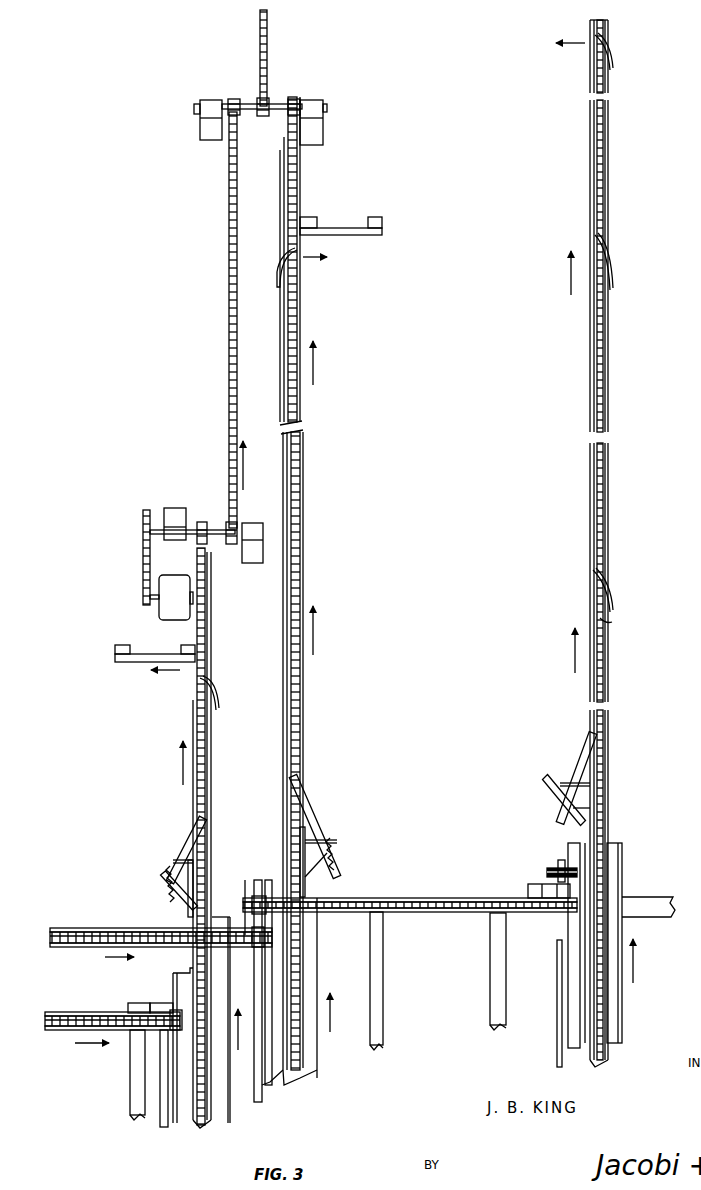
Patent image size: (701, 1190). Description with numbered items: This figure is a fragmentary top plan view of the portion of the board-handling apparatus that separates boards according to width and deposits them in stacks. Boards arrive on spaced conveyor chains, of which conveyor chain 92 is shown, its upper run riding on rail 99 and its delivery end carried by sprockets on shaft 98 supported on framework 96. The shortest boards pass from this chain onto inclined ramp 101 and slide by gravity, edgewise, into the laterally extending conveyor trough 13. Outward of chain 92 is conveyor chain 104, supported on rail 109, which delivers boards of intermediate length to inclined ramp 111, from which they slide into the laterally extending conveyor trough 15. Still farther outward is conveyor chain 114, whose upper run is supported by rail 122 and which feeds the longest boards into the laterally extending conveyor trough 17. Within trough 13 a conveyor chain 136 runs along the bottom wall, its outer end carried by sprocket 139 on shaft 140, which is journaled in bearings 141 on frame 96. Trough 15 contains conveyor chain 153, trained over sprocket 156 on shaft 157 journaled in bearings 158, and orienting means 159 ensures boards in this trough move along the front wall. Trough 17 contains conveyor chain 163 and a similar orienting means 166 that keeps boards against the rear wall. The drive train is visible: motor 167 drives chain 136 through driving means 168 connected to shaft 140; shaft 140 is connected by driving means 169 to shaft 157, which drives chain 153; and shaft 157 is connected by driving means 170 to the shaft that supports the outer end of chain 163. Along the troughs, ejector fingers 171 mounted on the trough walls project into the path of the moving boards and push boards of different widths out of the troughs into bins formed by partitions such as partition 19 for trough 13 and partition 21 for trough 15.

The laterally extending conveyor trough 13 is at (213, 995).
The laterally extending conveyor trough 15 is at (306, 973).
The laterally extending conveyor trough 17 is at (610, 1002).
The partition 19 is at (131, 665).
The partition 21 is at (364, 238).
The conveyor chain 92 is at (82, 1003).
The framework 96 is at (198, 137).
The shaft 98 is at (157, 1131).
The rail 99 is at (53, 1011).
The inclined ramp 101 is at (190, 1122).
The conveyor chain 104 is at (130, 927).
The rail 109 is at (83, 927).
The inclined ramp 111 is at (280, 1083).
The conveyor chain 114 is at (437, 897).
The rail 122 is at (416, 913).
The conveyor chain 136 is at (204, 1122).
The sprocket 139 is at (199, 521).
The shaft 140 is at (219, 540).
The bearings 141 is at (178, 507).
The conveyor chain 153 is at (297, 750).
The sprocket 156 is at (293, 85).
The shaft 157 is at (277, 113).
The bearings 158 is at (215, 100).
The orienting means 159 is at (314, 819).
The conveyor chain 163 is at (601, 617).
The orienting means 166 is at (579, 763).
The motor 167 is at (170, 609).
The driving means 168 is at (143, 578).
The driving means 169 is at (228, 338).
The driving means 170 is at (267, 48).
The ejector fingers 171 is at (279, 263).